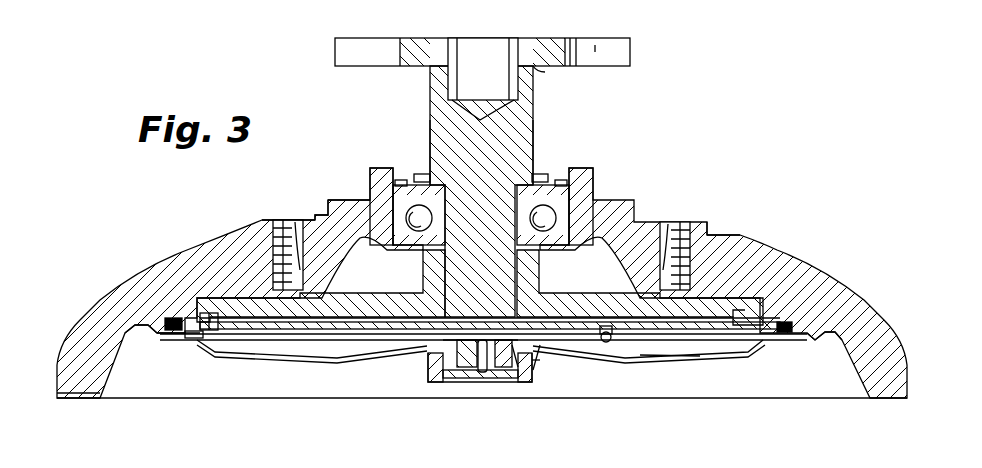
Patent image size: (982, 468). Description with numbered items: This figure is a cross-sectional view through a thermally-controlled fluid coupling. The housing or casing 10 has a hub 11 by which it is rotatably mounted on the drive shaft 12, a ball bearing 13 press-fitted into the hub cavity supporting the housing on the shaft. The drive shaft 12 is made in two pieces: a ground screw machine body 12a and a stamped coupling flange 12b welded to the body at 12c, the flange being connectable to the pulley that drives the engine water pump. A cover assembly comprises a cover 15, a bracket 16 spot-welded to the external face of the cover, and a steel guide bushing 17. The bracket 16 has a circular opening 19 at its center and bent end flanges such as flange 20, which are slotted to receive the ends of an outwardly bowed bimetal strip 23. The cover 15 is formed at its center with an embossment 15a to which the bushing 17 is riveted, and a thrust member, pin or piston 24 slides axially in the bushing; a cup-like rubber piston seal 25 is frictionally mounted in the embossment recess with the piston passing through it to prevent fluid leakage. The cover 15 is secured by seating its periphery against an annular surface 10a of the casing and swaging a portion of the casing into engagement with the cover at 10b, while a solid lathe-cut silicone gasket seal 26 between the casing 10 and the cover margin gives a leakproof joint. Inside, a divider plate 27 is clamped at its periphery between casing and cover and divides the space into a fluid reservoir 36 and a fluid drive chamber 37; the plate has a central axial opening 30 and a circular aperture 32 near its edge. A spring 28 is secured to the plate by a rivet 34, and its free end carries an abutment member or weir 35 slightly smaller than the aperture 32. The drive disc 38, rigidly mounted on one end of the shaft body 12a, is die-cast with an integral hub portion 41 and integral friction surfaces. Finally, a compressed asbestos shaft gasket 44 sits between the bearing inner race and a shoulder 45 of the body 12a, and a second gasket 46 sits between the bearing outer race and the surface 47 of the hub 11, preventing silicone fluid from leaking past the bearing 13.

The housing or casing 10 is at (146, 266).
The annular surface 10a is at (803, 336).
The swaged portion of casing 10b is at (163, 345).
The hub 11 is at (368, 198).
The drive shaft 12 is at (540, 125).
The body of drive shaft 12a is at (430, 150).
The coupling flange 12b is at (553, 38).
The weld 12c is at (540, 68).
The bearing 13 is at (571, 205).
The cover 15 is at (672, 358).
The embossment 15a is at (468, 364).
The bracket 16 is at (538, 368).
The steel guide bushing 17 is at (486, 360).
The circular opening 19 is at (445, 364).
The flange 20 is at (427, 354).
The bimetal strip 23 is at (513, 364).
The thrust member, pin or piston 24 is at (499, 360).
The rubber piston seal 25 is at (536, 370).
The gasket seal 26 is at (170, 316).
The divider plate 27 is at (308, 340).
The spring 28 is at (333, 355).
The axial opening 30 is at (432, 310).
The circular aperture 32 is at (224, 312).
The rivet 34 is at (608, 340).
The abutment member or weir 35 is at (197, 330).
The fluid reservoir 36 is at (742, 322).
The fluid drive chamber 37 is at (765, 236).
The drive disc 38 is at (324, 212).
The hub portion 41 is at (543, 288).
The shaft gasket 44 is at (543, 150).
The shoulder 45 is at (563, 186).
The second gasket 46 is at (403, 186).
The surface of hub 47 is at (370, 200).